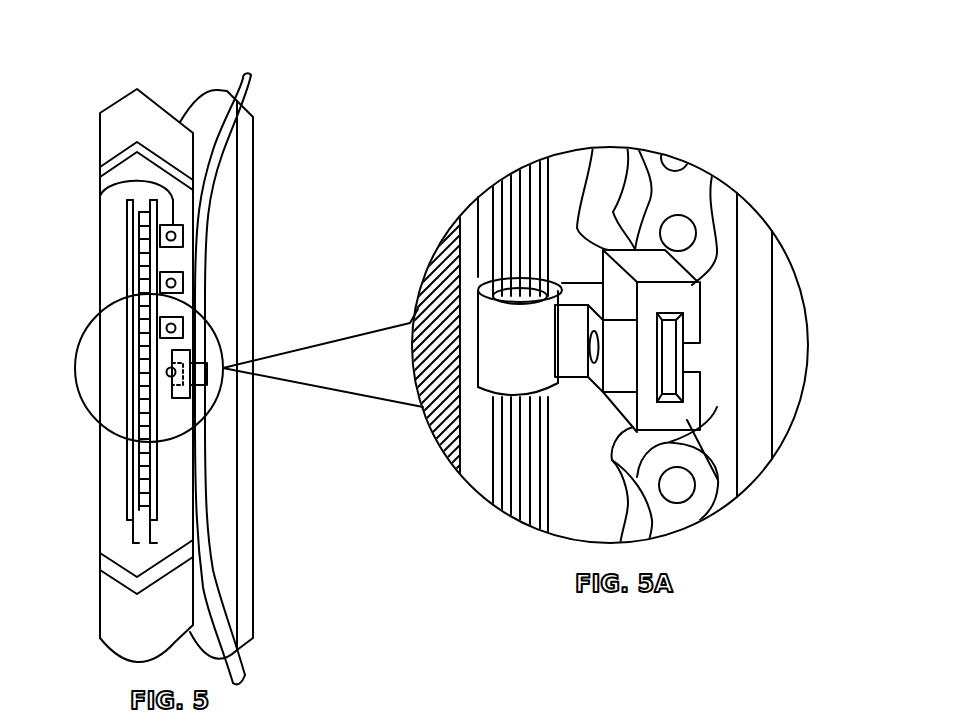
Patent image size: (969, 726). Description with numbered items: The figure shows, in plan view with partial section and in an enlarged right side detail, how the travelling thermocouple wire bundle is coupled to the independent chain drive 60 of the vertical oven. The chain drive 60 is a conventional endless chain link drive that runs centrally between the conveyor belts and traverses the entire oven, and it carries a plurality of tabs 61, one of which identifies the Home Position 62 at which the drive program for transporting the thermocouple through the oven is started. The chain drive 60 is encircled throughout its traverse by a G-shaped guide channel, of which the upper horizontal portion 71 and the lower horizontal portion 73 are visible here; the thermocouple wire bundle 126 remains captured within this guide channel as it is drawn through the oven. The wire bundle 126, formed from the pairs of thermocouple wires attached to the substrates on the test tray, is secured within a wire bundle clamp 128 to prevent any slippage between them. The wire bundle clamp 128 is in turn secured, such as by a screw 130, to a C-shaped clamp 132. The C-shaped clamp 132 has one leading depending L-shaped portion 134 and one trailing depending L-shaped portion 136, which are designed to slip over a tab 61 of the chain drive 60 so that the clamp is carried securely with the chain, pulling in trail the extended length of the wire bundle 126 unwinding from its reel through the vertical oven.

In FIG. 5, the independent chain drive 60 is at (127, 278).
In FIG. 5A, the independent chain drive 60 is at (710, 407).
In FIG. 5, the tab 61 is at (125, 184).
In FIG. 5A, the tab 61 is at (668, 358).
In FIG. 5, the Home Position 62 is at (168, 368).
In FIG. 5A, the upper horizontal portion 71 is at (442, 307).
In FIG. 5A, the lower horizontal portion 73 is at (757, 290).
In FIG. 5, the wire bundle 126 is at (247, 76).
In FIG. 5A, the wire bundle 126 is at (512, 453).
In FIG. 5A, the wire bundle clamp 128 is at (485, 265).
In FIG. 5A, the screw 130 is at (592, 358).
In FIG. 5A, the C-shaped clamp 132 is at (593, 150).
In FIG. 5A, the leading depending L-shaped portion 134 is at (680, 302).
In FIG. 5A, the trailing depending L-shaped portion 136 is at (705, 462).